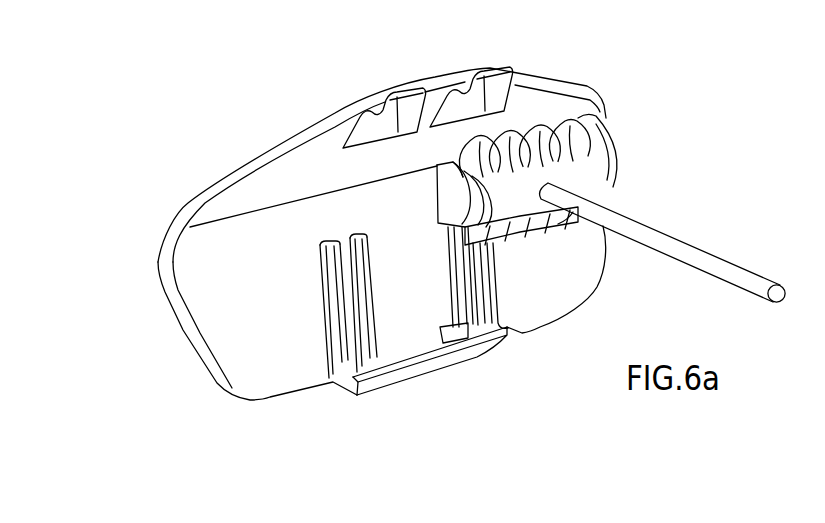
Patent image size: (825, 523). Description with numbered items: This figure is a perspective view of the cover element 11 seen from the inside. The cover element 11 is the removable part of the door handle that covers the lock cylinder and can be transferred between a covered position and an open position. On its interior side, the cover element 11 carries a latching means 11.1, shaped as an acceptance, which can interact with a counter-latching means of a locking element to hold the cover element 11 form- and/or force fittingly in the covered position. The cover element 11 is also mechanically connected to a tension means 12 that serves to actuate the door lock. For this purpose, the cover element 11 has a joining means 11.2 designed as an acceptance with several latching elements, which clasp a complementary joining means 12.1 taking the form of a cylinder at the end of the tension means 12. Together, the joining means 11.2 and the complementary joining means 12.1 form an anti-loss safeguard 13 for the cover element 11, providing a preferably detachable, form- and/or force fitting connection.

The cover element 11 is at (308, 168).
The latching means 11.1 is at (450, 350).
The joining means 11.2 is at (605, 125).
The tension means 12 is at (720, 263).
The complementary joining means 12.1 is at (588, 173).
The anti-loss safeguard 13 is at (663, 50).